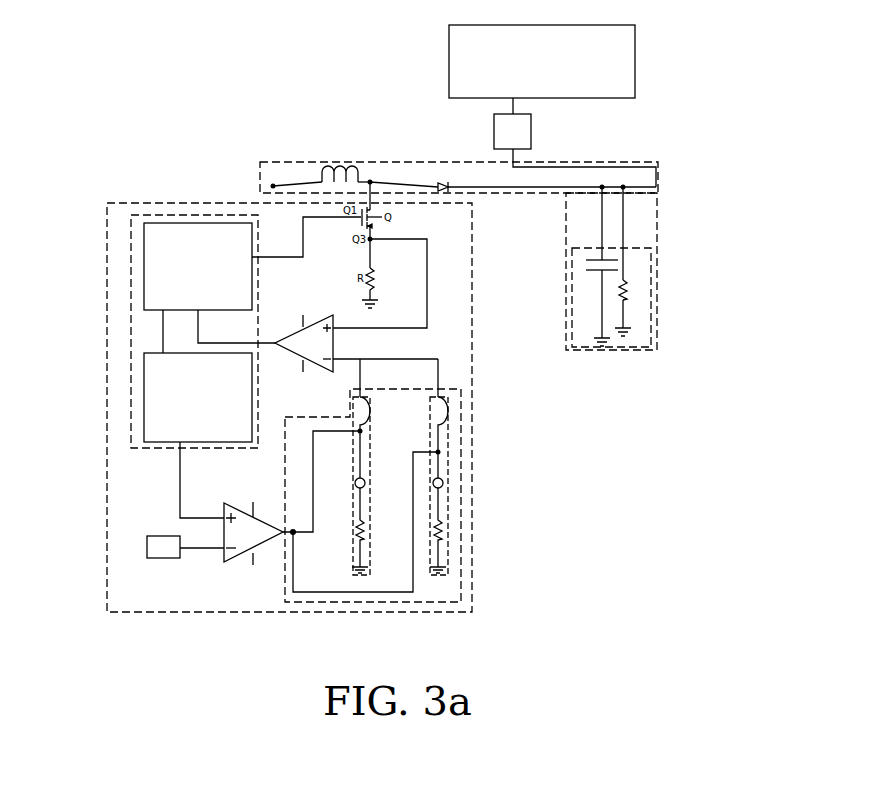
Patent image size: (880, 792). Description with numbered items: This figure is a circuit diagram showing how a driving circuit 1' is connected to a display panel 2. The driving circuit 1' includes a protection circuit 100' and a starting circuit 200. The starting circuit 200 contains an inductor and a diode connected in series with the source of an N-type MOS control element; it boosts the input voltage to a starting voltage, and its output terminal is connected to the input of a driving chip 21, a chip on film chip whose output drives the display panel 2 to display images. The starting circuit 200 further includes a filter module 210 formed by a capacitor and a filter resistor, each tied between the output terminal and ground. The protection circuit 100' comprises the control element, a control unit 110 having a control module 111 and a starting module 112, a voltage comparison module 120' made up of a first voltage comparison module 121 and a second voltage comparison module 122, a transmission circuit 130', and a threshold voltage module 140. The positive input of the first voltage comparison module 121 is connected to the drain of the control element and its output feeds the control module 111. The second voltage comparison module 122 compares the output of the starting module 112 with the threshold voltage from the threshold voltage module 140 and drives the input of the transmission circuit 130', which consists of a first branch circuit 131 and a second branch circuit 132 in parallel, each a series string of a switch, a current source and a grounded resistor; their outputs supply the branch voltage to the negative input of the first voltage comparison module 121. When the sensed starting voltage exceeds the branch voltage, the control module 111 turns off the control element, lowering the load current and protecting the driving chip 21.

The driving circuit 1' is at (133, 136).
The display panel 2 is at (635, 62).
The driving chip 21 is at (526, 130).
The protection circuit 100' is at (264, 386).
The control unit 110 is at (141, 331).
The control module 111 is at (148, 270).
The starting module 112 is at (156, 397).
The voltage comparison module 120' is at (270, 478).
The first voltage comparison module 121 is at (333, 345).
The second voltage comparison module 122 is at (247, 550).
The transmission circuit 130' is at (421, 500).
The first branch circuit 131 is at (360, 577).
The second branch circuit 132 is at (438, 577).
The threshold voltage module 140 is at (168, 553).
The starting circuit 200 is at (259, 170).
The filter module 210 is at (651, 295).